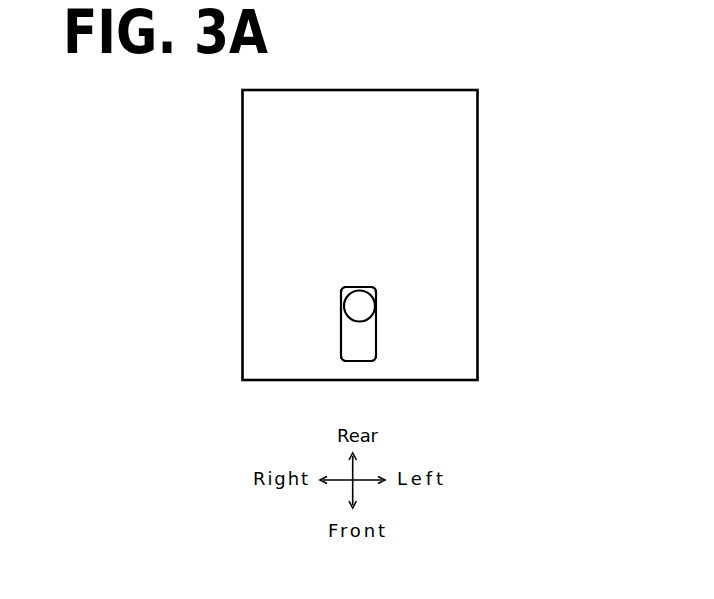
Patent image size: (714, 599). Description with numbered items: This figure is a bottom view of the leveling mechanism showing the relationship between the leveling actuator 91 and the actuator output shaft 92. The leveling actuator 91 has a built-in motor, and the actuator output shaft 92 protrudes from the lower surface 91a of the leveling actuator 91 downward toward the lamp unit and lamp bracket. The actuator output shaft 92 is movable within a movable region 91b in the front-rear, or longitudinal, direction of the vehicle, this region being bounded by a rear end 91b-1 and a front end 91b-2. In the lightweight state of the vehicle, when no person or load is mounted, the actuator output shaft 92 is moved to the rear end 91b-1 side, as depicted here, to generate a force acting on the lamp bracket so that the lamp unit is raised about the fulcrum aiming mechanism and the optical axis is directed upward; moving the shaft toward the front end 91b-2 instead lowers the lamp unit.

The leveling actuator 91 is at (478, 113).
The lower surface of the leveling actuator 91a is at (453, 169).
The movable region 91b is at (376, 352).
The rear end 91b-1 is at (350, 286).
The front end 91b-2 is at (352, 361).
The actuator output shaft 92 is at (360, 306).